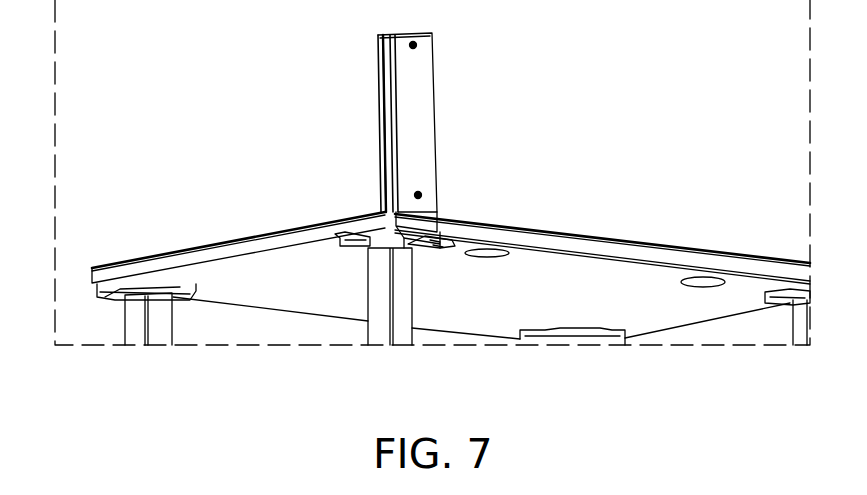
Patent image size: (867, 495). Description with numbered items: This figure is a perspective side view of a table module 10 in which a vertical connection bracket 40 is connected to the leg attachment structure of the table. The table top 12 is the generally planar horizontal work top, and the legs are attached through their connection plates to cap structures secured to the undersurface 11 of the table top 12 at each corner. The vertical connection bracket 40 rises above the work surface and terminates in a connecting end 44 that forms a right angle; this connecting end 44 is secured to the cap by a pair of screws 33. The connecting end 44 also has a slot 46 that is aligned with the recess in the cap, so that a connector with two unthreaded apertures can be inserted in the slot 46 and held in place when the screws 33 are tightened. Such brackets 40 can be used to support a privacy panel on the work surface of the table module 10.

The table module 10 is at (259, 160).
The undersurface 11 is at (688, 312).
The table top 12 is at (565, 237).
The screws 33 is at (418, 249).
The vertical connection bracket 40 is at (380, 100).
The connecting end 44 is at (422, 221).
The slot 46 is at (437, 248).